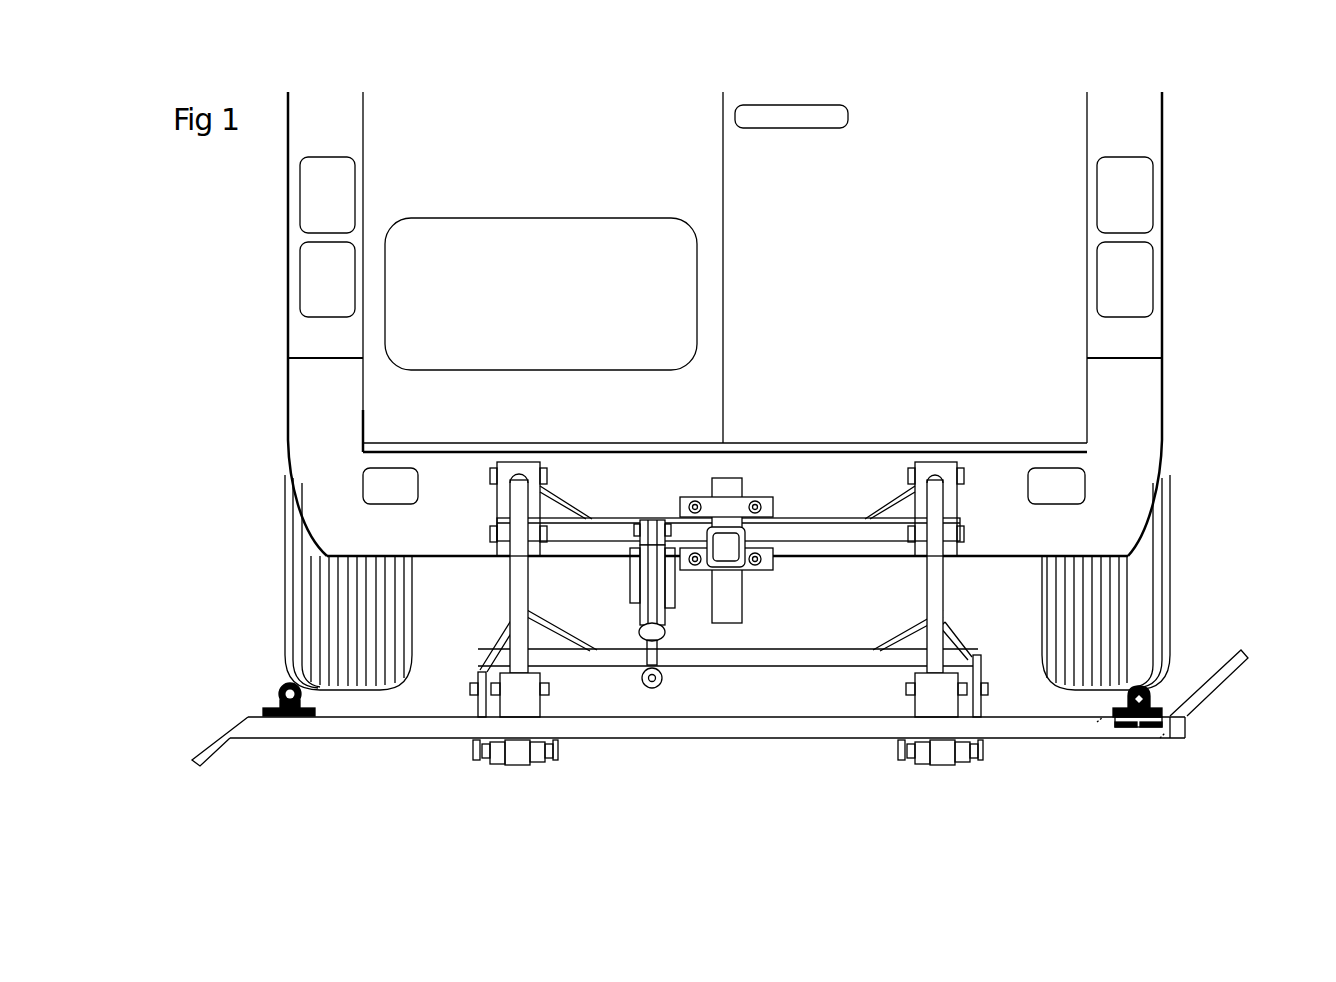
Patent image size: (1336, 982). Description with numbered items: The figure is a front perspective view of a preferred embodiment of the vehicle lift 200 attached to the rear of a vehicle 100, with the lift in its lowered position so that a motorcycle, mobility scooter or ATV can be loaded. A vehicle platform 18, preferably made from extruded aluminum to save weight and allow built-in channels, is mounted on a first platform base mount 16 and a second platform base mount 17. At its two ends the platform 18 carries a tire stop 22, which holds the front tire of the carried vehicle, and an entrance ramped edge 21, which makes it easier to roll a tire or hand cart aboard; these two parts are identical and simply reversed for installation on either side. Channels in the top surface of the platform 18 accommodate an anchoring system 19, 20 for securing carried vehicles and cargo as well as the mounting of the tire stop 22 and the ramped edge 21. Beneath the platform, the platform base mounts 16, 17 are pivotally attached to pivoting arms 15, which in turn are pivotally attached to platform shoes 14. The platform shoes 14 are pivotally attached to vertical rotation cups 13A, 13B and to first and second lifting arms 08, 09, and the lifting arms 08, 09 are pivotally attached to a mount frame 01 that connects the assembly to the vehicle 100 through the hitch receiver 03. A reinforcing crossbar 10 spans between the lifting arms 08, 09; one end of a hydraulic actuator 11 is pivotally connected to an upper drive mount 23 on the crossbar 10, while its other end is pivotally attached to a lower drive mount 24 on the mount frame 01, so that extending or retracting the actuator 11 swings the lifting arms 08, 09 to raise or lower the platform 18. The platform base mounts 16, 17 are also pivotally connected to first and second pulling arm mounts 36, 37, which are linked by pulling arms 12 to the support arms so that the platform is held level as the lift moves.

The vehicle 100 is at (1140, 148).
The vehicle lift 200 is at (497, 518).
The mount frame 01 is at (809, 538).
The hitch receiver 03 is at (725, 594).
The first lifting arm 08 is at (510, 583).
The second lifting arm 09 is at (933, 575).
The reinforcing crossbar 10 is at (820, 661).
The hydraulic actuator 11 is at (650, 607).
The pulling arm 12 is at (478, 703).
The vertical rotation cup 13A is at (522, 701).
The vertical rotation cup 13B is at (915, 696).
The platform shoe 14 is at (933, 763).
The pivoting arm 15 is at (508, 763).
The first platform base mount 16 is at (553, 762).
The second platform base mount 17 is at (895, 762).
The vehicle platform 18 is at (712, 740).
The anchoring system 19 is at (1136, 723).
The anchoring system 20 is at (1140, 693).
The entrance ramped edge 21 is at (205, 754).
The tire stop 22 is at (1193, 700).
The upper drive mount 23 is at (662, 664).
The lower drive mount 24 is at (641, 522).
The first pulling arm mount 36 is at (500, 650).
The second pulling arm mount 37 is at (955, 648).